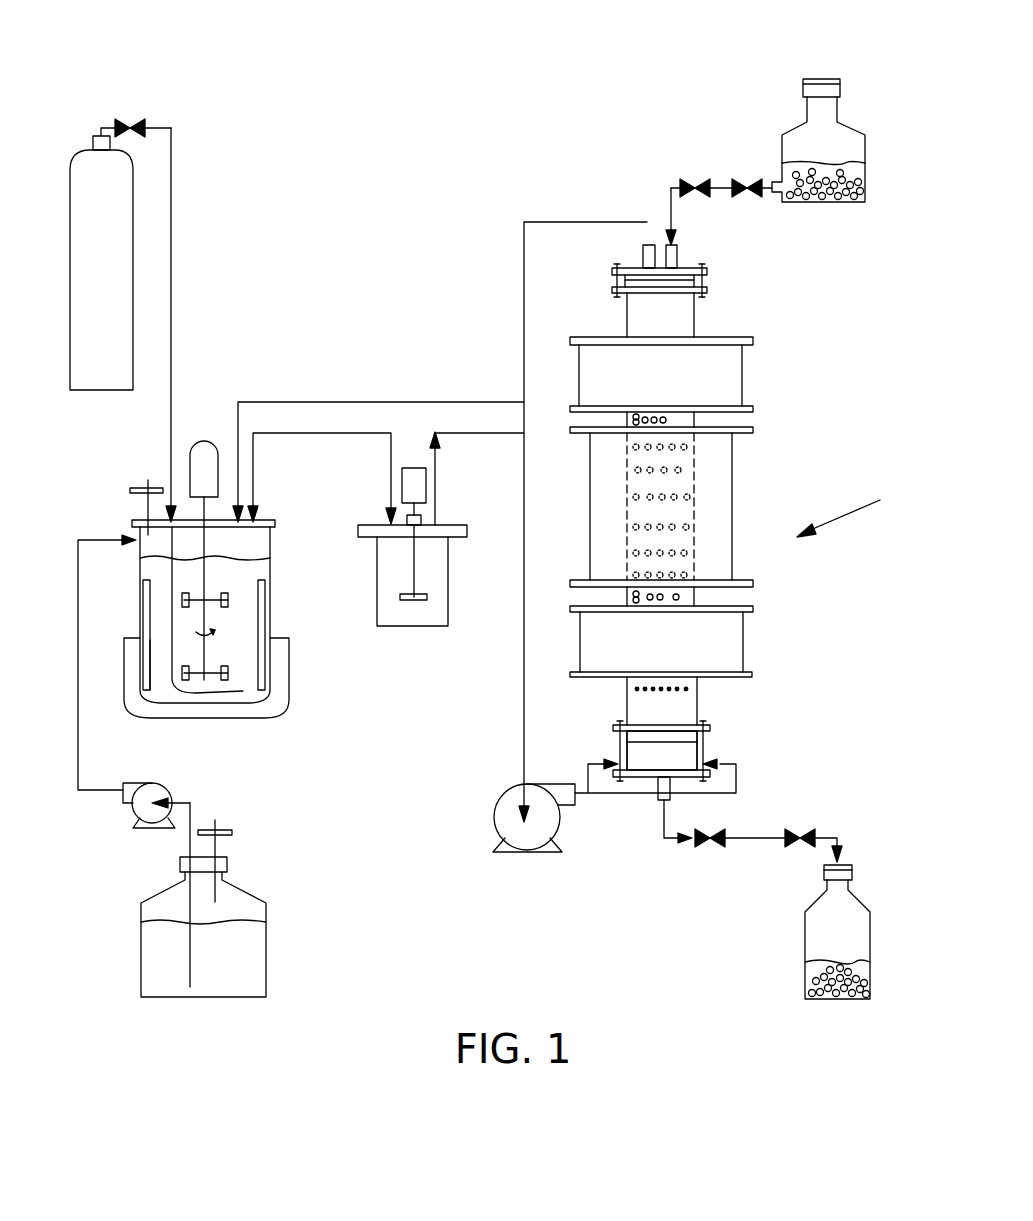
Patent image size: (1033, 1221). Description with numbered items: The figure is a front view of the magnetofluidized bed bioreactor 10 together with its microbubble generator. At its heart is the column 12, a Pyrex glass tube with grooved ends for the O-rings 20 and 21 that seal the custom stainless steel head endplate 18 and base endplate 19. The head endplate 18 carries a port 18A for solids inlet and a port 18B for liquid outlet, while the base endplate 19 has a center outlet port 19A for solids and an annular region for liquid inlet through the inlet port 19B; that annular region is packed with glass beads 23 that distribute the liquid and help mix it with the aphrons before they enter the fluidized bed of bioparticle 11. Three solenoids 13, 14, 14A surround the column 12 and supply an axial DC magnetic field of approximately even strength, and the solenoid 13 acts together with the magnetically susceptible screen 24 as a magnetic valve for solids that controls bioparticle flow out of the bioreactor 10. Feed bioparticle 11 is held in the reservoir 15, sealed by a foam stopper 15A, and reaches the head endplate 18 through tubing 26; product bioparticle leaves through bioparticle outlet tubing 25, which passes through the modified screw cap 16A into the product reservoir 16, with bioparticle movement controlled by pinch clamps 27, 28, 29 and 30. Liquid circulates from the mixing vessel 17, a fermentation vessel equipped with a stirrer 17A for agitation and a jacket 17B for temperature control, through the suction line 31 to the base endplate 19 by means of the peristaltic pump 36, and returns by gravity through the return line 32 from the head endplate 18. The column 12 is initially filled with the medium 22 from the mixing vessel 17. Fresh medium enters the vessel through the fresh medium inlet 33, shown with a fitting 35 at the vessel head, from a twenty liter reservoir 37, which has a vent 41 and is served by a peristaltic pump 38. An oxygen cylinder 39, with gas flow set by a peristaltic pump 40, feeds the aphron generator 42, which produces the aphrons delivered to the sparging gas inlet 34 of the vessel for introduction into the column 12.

The magnetofluidized bed bioreactor 10 is at (838, 506).
The bioparticle 11 is at (682, 420).
The column 12 is at (697, 320).
The solenoid 13 is at (600, 640).
The solenoid 14 is at (712, 478).
The solenoid 14A is at (722, 375).
The feed bioparticle reservoir 15 is at (852, 128).
The foam stopper 15A is at (823, 85).
The product bioparticle reservoir 16 is at (853, 928).
The screw cap 16A is at (845, 862).
The mixing vessel 17 is at (272, 604).
The stirrer 17A is at (183, 600).
The jacket 17B is at (280, 680).
The head endplate 18 is at (706, 272).
The port 18A is at (665, 240).
The port 18B is at (643, 250).
The base endplate 19 is at (643, 777).
The center outlet port 19A is at (670, 795).
The inlet port 19B is at (600, 762).
The O-ring 20 is at (684, 270).
The O-ring 21 is at (677, 742).
The medium 22 is at (157, 650).
The glass beads 23 is at (637, 752).
The screen 24 is at (640, 683).
The bioparticle outlet tubing 25 is at (745, 840).
The tubing 26 is at (671, 186).
The pinch clamp 27 is at (694, 178).
The pinch clamp 28 is at (747, 178).
The pinch clamp 29 is at (710, 845).
The pinch clamp 30 is at (800, 845).
The suction line 31 is at (296, 433).
The return line 32 is at (520, 300).
The fresh medium inlet 33 is at (98, 540).
The sparging gas inlet 34 is at (170, 480).
The valve 35 is at (143, 505).
The peristaltic pump 36 is at (505, 820).
The reservoir 37 is at (237, 972).
The peristaltic pump 38 is at (140, 810).
The oxygen cylinder 39 is at (85, 250).
The peristaltic pump 40 is at (130, 118).
The vent 41 is at (222, 830).
The aphron generator 42 is at (430, 615).